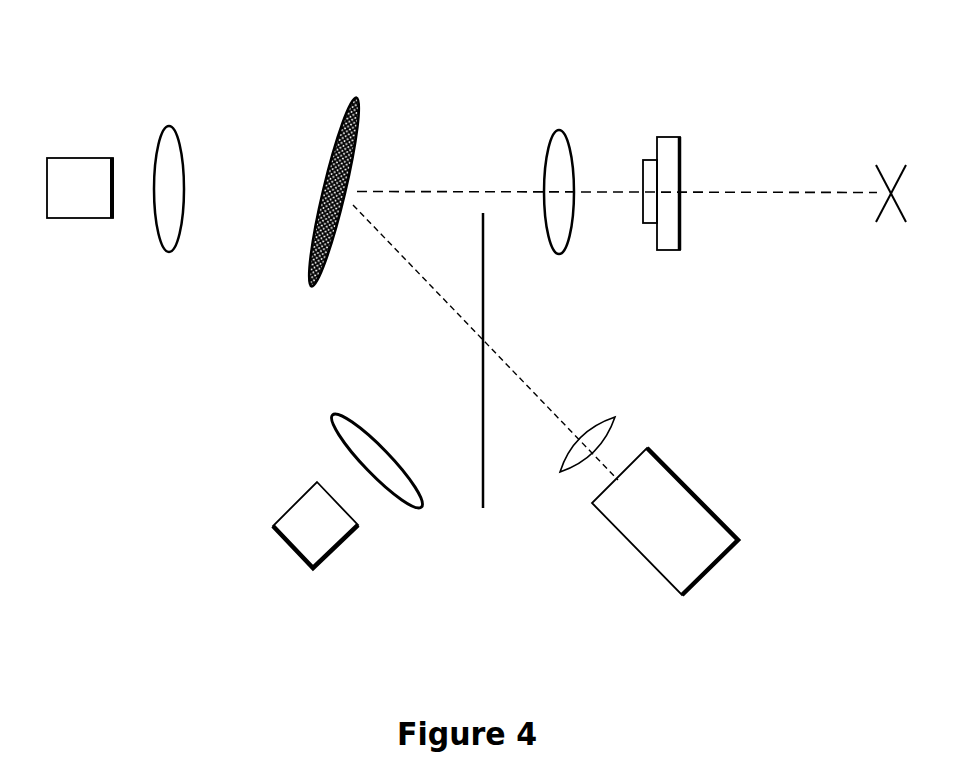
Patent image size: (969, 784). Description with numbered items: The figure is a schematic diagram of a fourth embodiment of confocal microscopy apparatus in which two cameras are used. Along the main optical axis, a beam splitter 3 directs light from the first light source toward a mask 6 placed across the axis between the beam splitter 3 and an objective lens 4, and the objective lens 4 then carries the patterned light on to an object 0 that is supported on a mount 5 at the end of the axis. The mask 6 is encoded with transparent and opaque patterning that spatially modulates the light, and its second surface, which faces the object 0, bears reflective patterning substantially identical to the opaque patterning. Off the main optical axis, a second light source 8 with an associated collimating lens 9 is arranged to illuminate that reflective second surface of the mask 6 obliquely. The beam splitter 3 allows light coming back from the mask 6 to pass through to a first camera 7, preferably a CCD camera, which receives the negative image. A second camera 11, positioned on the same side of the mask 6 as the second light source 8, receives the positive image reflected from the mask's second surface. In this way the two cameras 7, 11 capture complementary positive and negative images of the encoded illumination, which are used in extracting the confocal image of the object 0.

The object 0 is at (649, 160).
The beam splitter 3 is at (485, 493).
The objective lens 4 is at (555, 168).
The mount 5 is at (680, 163).
The mask 6 is at (360, 98).
The camera 7 is at (80, 158).
The second light source 8 is at (685, 527).
The collimating lens 9 is at (605, 418).
The second camera 11 is at (297, 500).